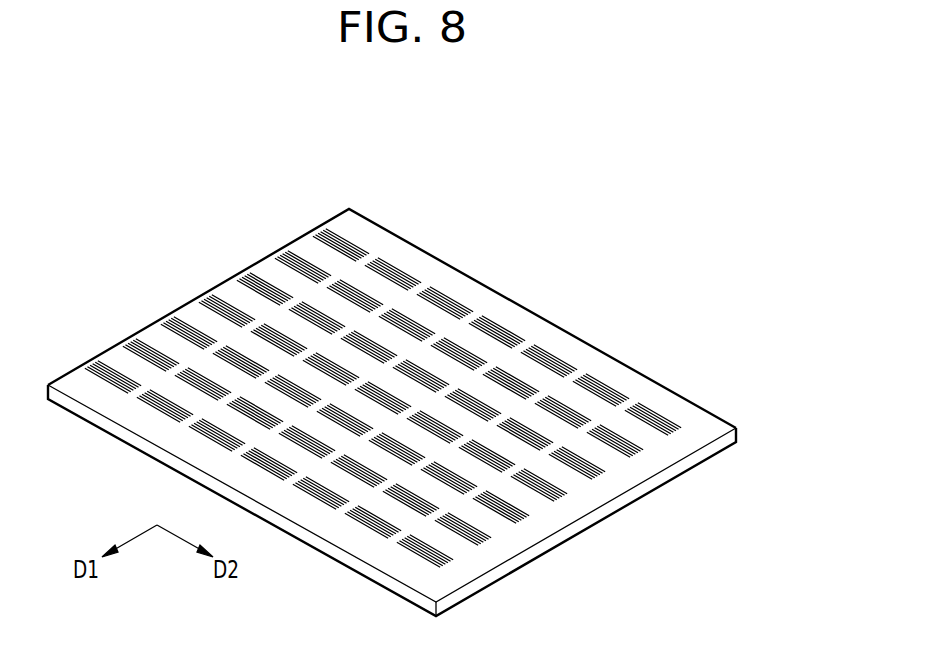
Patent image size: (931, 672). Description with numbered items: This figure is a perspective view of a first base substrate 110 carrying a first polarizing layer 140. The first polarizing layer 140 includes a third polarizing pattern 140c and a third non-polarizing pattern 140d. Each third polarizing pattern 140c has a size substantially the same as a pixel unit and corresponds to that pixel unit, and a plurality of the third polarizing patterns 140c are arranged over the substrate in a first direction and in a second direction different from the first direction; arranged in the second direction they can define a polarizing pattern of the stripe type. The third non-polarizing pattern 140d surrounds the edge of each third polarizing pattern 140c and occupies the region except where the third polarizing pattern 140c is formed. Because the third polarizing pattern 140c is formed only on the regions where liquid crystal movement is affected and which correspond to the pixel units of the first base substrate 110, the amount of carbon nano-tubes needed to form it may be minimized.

The first base substrate 110 is at (737, 429).
The first polarizing layer 140 is at (383, 339).
The third non-polarizing pattern 140d is at (297, 250).
The third polarizing pattern 140c is at (328, 233).